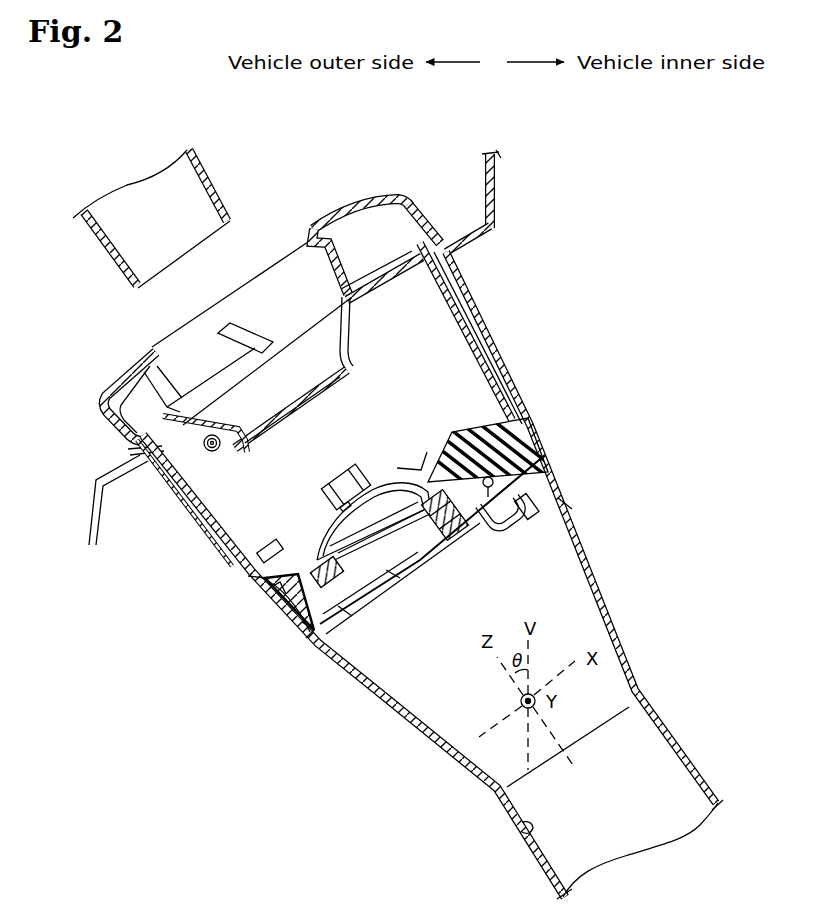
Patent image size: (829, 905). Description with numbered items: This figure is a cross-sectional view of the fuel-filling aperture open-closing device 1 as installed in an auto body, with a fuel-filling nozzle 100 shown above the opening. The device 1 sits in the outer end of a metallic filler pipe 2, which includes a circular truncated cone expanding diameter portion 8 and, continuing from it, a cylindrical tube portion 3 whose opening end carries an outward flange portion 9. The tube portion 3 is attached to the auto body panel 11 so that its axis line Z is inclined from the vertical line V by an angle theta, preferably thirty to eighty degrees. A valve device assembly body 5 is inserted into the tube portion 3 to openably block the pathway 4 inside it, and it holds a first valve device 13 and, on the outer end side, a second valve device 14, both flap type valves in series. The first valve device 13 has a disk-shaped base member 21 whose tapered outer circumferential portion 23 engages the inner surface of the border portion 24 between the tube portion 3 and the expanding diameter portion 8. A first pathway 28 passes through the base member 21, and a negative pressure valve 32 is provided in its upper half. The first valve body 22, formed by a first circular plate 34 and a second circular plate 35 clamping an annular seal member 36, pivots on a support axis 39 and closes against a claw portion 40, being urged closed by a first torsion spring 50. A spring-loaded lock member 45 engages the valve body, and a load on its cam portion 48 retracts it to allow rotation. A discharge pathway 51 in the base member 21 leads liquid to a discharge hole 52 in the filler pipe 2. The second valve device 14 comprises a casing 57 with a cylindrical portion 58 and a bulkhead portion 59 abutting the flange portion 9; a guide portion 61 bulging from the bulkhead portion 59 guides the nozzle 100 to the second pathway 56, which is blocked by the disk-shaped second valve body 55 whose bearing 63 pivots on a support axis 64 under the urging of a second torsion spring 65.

The fuel-filling aperture open-closing device 1 is at (525, 346).
The filler pipe 2 is at (620, 607).
The tube portion 3 is at (177, 485).
The pathway 4 is at (522, 826).
The valve device assembly body 5 is at (398, 194).
The expanding diameter portion 8 is at (401, 718).
The flange portion 9 is at (421, 242).
The auto body panel 11 is at (500, 182).
The first valve device 13 is at (345, 612).
The second valve device 14 is at (313, 485).
The base member 21 is at (569, 504).
The first valve body 22 is at (393, 576).
The outer circumferential portion 23 is at (549, 451).
The border portion 24 is at (270, 606).
The first pathway 28 is at (311, 571).
The negative pressure valve 32 is at (481, 337).
The first circular plate 34 is at (420, 486).
The second circular plate 35 is at (409, 560).
The seal member 36 is at (306, 632).
The support axis 39 is at (492, 479).
The claw portion 40 is at (429, 466).
The lock member 45 is at (245, 512).
The cam portion 48 is at (340, 472).
The first torsion spring 50 is at (461, 541).
The discharge pathway 51 is at (300, 527).
The discharge hole 52 is at (246, 576).
The second valve body 55 is at (306, 380).
The second pathway 56 is at (212, 344).
The casing 57 is at (369, 267).
The cylindrical portion 58 is at (464, 315).
The bulkhead portion 59 is at (392, 262).
The guide portion 61 is at (350, 344).
The bearing 63 is at (168, 467).
The support axis 64 is at (194, 375).
The second torsion spring 65 is at (128, 466).
The fuel-filling nozzle 100 is at (203, 180).